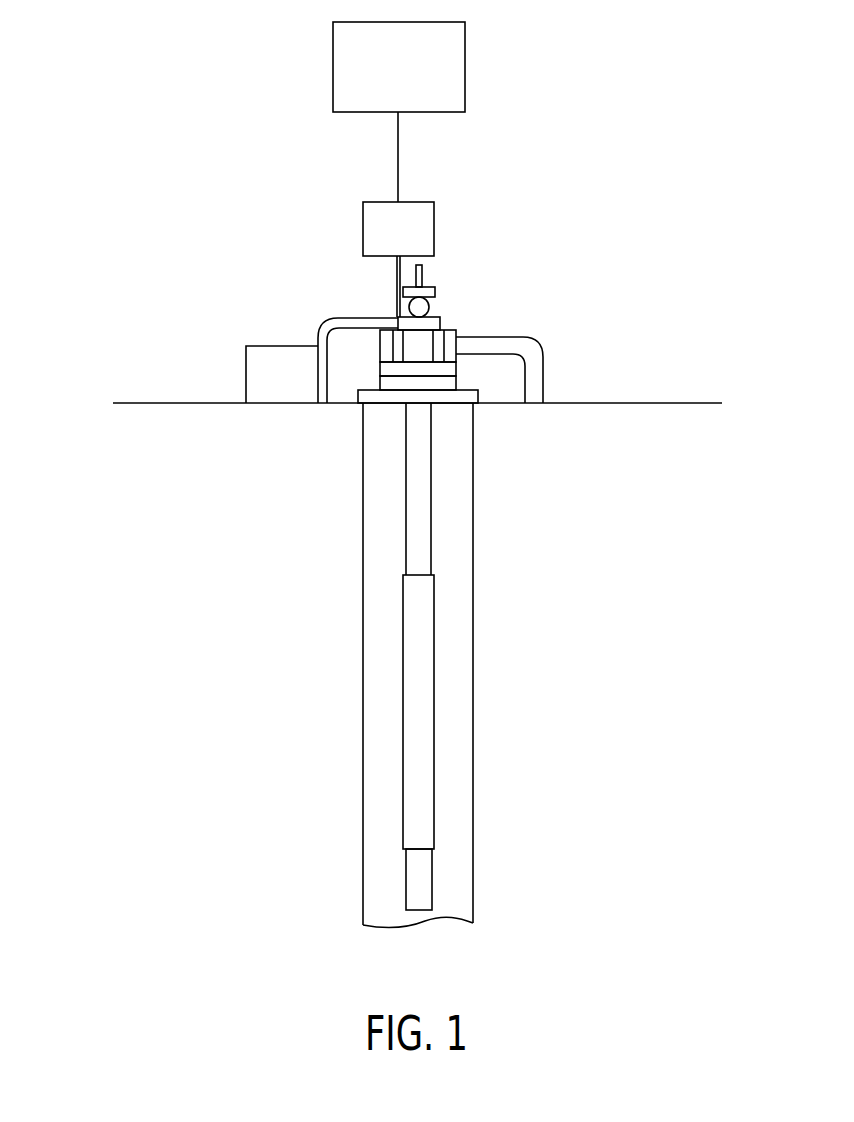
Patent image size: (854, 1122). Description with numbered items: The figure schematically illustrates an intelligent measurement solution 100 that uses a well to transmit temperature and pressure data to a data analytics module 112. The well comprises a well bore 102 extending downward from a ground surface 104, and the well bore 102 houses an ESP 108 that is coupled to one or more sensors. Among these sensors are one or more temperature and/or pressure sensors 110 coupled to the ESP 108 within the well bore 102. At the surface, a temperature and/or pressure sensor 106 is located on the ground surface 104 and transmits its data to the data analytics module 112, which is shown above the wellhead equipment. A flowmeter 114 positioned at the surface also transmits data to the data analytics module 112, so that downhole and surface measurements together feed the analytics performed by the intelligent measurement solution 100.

The intelligent measurement solution 100 is at (132, 280).
The well bore 102 is at (266, 585).
The ground surface 104 is at (636, 402).
The temperature and/or pressure sensor 106 is at (363, 228).
The ESP 108 is at (455, 692).
The temperature and/or pressure sensors 110 is at (455, 875).
The data analytics module 112 is at (333, 66).
The flowmeter 114 is at (246, 380).